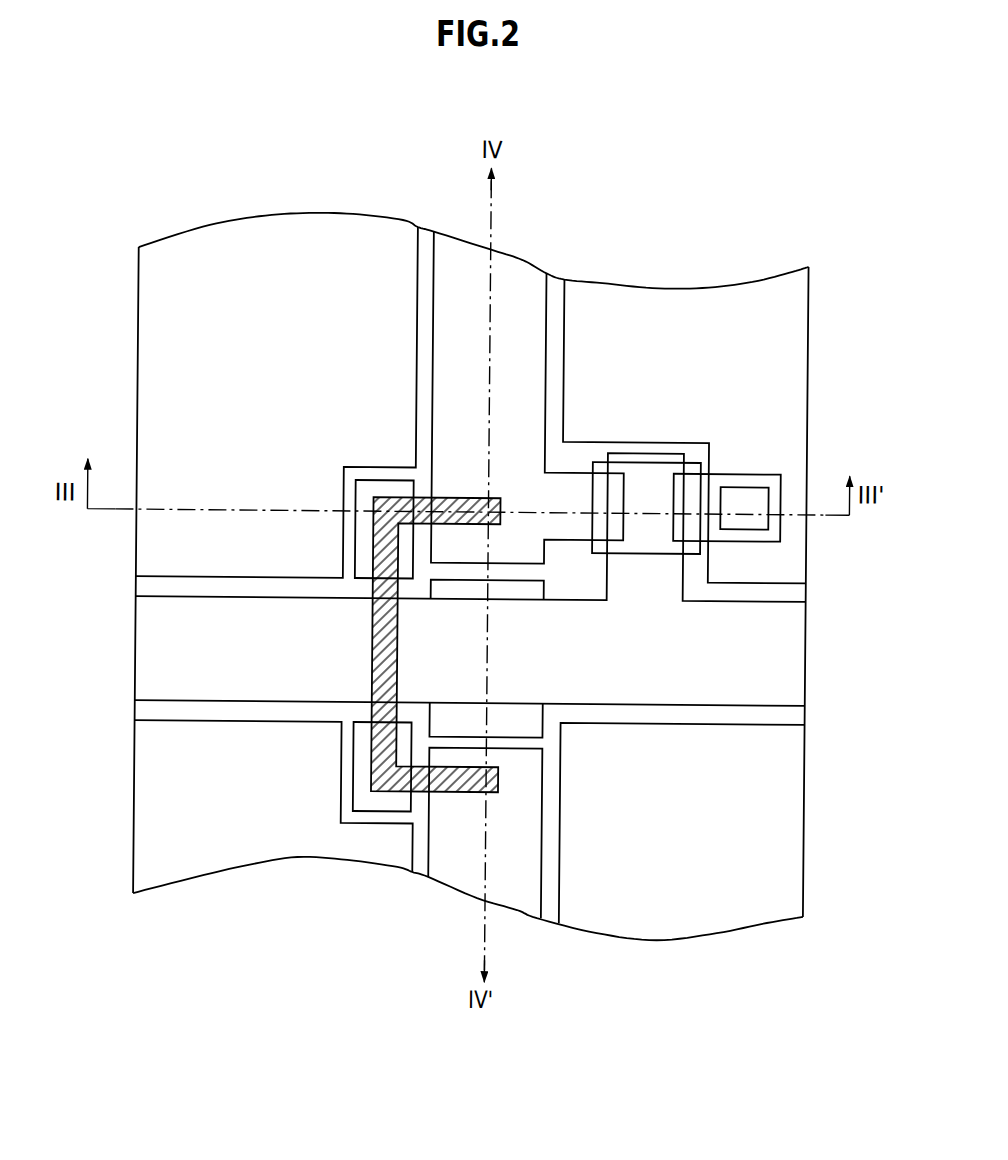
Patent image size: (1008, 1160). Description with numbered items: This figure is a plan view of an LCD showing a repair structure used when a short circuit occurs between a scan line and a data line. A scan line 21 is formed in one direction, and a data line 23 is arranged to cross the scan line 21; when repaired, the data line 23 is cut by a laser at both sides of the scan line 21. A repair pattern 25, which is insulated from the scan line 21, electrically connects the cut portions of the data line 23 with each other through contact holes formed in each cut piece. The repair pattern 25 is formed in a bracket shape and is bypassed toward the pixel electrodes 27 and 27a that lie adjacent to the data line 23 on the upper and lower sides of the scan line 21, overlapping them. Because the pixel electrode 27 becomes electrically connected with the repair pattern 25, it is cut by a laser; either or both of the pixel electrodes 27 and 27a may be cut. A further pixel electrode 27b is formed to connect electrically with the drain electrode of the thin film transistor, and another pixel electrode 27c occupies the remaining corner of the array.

The scan line 21 is at (793, 656).
The data line 23 is at (526, 283).
The repair pattern 25 is at (379, 652).
The pixel electrode 27 is at (150, 377).
The pixel electrode 27a is at (148, 807).
The pixel electrode 27b is at (795, 373).
The pixel electrode 27c is at (797, 845).